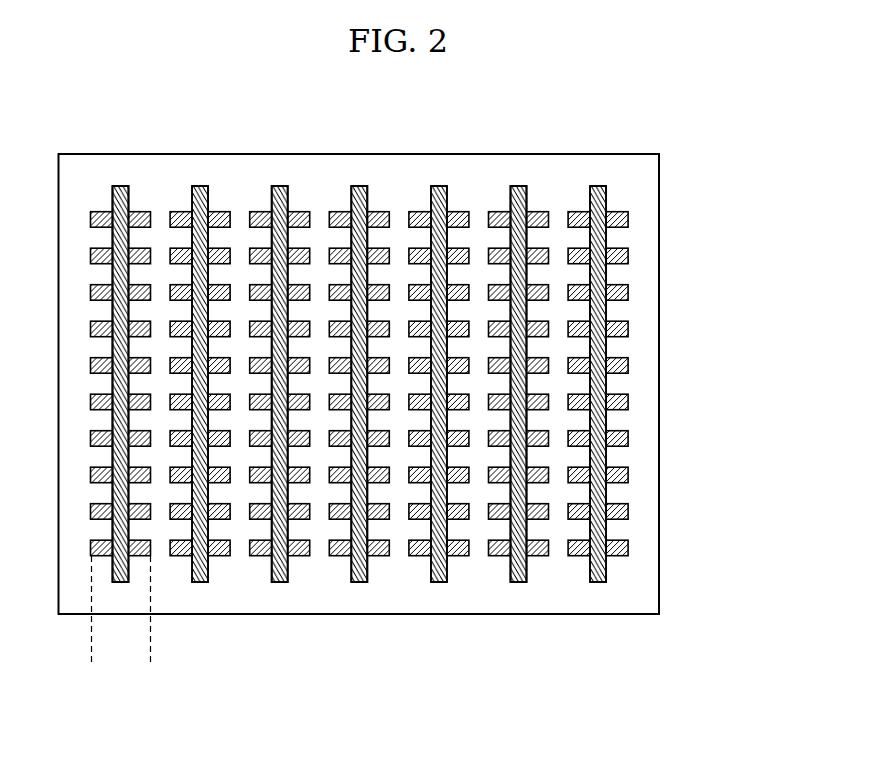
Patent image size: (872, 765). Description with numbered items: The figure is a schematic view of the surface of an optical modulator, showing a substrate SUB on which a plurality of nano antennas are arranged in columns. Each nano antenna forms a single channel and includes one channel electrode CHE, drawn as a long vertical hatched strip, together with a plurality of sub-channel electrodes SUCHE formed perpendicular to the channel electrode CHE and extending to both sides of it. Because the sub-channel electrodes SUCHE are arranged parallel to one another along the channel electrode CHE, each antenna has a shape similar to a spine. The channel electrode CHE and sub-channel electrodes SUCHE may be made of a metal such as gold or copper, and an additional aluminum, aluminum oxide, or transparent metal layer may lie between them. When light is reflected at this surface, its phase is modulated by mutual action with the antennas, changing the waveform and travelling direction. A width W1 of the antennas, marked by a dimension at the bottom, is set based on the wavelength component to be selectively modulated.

The substrate SUB is at (659, 263).
The channel electrode CHE is at (606, 197).
The sub-channel electrodes SUCHE is at (628, 218).
The width of the first nano antennas W1 is at (92, 642).